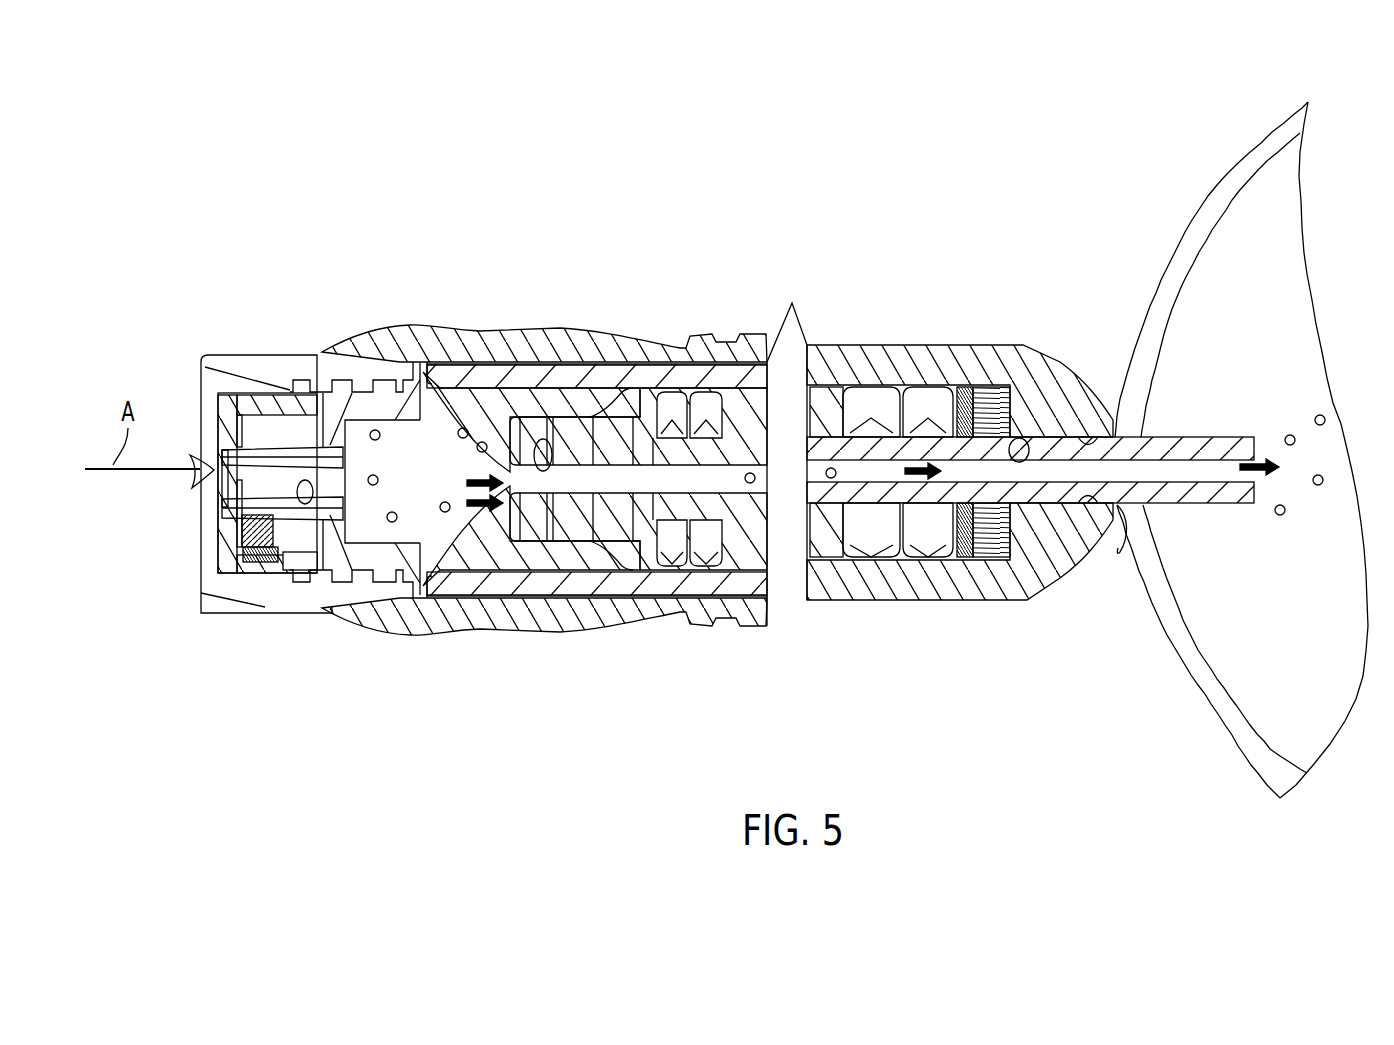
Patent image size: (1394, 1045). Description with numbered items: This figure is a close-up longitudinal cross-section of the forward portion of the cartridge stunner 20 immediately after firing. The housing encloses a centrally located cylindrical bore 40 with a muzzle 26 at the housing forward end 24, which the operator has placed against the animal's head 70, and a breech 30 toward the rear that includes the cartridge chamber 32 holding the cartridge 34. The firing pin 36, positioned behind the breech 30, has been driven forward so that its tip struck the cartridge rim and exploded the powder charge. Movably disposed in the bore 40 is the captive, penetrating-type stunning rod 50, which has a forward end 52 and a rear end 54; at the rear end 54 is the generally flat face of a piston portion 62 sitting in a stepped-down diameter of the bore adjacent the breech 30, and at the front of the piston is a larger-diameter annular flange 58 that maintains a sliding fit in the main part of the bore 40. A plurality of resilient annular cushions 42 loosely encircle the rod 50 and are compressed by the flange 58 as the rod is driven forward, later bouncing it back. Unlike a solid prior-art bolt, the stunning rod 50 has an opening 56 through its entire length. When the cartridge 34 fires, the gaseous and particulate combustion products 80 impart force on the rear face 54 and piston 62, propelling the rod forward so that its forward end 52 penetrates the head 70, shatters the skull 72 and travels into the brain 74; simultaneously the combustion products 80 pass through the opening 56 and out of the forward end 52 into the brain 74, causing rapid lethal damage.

The cartridge stunner 20 is at (556, 225).
The housing forward end 24 is at (1120, 556).
The muzzle 26 is at (1082, 428).
The breech 30 is at (227, 400).
The cartridge chamber 32 is at (312, 474).
The cartridge 34 is at (282, 480).
The firing pin 36 is at (212, 480).
The bore 40 is at (748, 572).
The resilient annular cushions 42 is at (713, 553).
The stunning rod 50 is at (890, 453).
The stunning rod forward end 52 is at (1254, 436).
The stunning rod rear end 54 is at (505, 535).
The opening 56 is at (428, 420).
The annular flange 58 is at (650, 565).
The piston portion 62 is at (573, 527).
The animal's head 70 is at (1138, 210).
The skull 72 is at (1221, 712).
The brain 74 is at (1324, 716).
The combustion products 80 is at (378, 478).